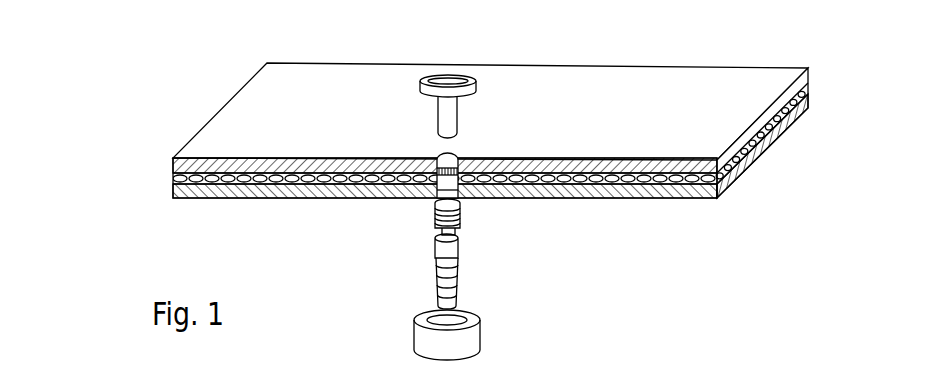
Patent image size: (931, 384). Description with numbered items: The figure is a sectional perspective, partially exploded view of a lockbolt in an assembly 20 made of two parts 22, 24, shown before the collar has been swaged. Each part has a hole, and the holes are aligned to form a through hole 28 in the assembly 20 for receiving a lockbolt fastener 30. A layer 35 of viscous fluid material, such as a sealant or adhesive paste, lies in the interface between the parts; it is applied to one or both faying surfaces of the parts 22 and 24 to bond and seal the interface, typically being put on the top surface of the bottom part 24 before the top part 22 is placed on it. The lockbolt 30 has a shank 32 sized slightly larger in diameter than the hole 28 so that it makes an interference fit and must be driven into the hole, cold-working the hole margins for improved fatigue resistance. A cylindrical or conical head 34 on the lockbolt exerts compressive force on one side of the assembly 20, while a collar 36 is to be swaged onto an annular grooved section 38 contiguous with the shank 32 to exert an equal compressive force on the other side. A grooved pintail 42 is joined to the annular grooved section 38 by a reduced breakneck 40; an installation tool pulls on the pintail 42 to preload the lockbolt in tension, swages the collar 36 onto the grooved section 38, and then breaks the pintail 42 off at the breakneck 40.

The assembly 20 is at (198, 52).
The top part 22 is at (172, 168).
The bottom part 24 is at (170, 190).
The through hole 28 is at (428, 207).
The lockbolt fastener 30 is at (372, 108).
The shank 32 is at (448, 110).
The head 34 is at (480, 82).
The layer of viscous fluid material 35 is at (740, 172).
The collar 36 is at (480, 343).
The annular grooved section 38 is at (460, 218).
The reduced breakneck 40 is at (440, 231).
The grooved pintail 42 is at (460, 246).